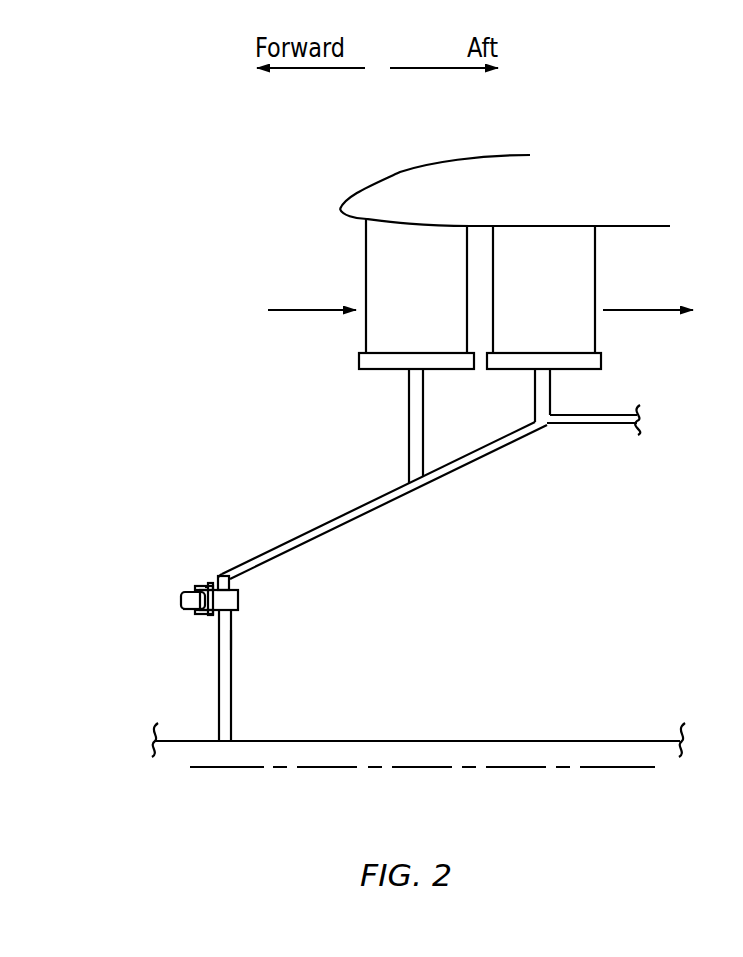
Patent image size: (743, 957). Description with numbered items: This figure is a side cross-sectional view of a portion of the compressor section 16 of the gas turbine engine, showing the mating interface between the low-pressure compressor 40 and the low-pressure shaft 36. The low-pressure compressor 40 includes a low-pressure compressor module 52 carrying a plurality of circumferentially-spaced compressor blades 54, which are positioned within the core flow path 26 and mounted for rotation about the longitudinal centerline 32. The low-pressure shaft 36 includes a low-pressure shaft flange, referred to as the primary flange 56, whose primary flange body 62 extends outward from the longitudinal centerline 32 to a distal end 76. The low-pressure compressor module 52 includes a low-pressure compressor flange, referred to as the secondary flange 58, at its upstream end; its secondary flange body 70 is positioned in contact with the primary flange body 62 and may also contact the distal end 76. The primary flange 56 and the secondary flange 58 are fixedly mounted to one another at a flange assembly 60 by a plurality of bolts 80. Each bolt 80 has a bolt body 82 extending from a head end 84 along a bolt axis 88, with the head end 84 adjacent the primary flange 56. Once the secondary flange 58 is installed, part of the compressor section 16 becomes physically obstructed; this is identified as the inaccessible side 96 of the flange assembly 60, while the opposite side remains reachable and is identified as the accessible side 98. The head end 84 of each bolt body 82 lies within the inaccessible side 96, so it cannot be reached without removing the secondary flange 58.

The compressor section 16 is at (633, 148).
The low-pressure compressor 40 is at (285, 254).
The compressor blades 54 is at (432, 300).
The core flow path 26 is at (287, 313).
The accessible side 98 is at (164, 462).
The low-pressure compressor module 52 is at (465, 475).
The distal end 76 is at (230, 578).
The secondary flange 58 is at (204, 578).
The bolt 80 is at (250, 593).
The flange assembly 60 is at (254, 580).
The bolt axis 88 is at (181, 602).
The bolt body 82 is at (193, 612).
The head end 84 is at (240, 602).
The secondary flange body 70 is at (205, 587).
The primary flange 56 is at (234, 687).
The primary flange body 62 is at (231, 642).
The inaccessible side 96 is at (531, 592).
The low-pressure shaft 36 is at (558, 720).
The longitudinal centerline 32 is at (655, 767).